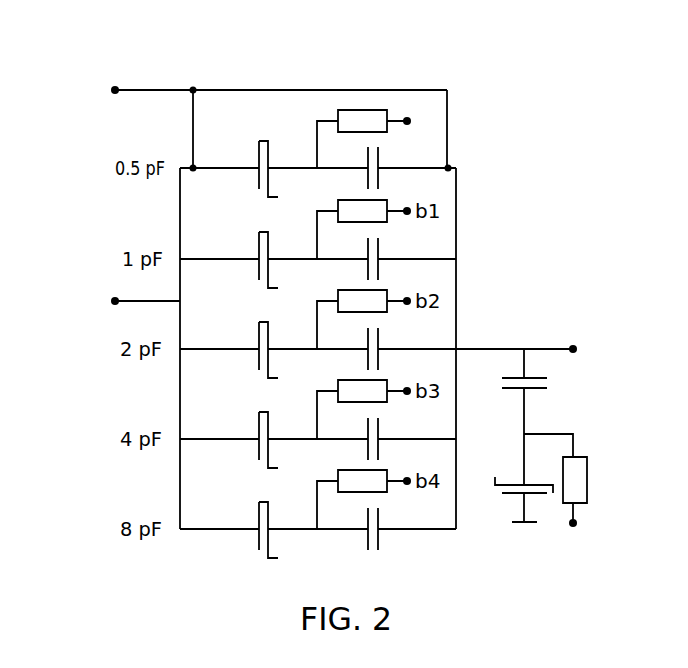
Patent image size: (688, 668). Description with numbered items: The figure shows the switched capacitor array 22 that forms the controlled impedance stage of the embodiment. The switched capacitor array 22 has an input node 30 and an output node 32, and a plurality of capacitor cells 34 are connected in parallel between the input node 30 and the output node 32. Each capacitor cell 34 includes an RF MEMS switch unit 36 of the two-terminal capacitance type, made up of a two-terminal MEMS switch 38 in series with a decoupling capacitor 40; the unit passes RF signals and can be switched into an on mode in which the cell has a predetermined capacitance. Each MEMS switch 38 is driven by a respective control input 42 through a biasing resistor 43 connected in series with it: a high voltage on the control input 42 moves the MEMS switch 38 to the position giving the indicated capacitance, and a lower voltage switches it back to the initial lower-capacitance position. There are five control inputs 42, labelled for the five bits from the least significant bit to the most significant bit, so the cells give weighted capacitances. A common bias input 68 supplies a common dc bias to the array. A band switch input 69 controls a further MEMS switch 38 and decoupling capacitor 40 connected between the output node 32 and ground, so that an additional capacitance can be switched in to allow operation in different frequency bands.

The switched capacitor array 22 is at (519, 120).
The input node 30 is at (113, 300).
The output node 32 is at (575, 348).
The capacitor cell 34 is at (467, 168).
The RF MEMS switch unit 36 is at (251, 545).
The two-terminal MEMS switch 38 is at (270, 545).
The decoupling capacitor 40 is at (378, 548).
The control input 42 is at (408, 117).
The biasing resistor 43 is at (362, 109).
The common bias input 68 is at (114, 87).
The band switch input 69 is at (574, 525).